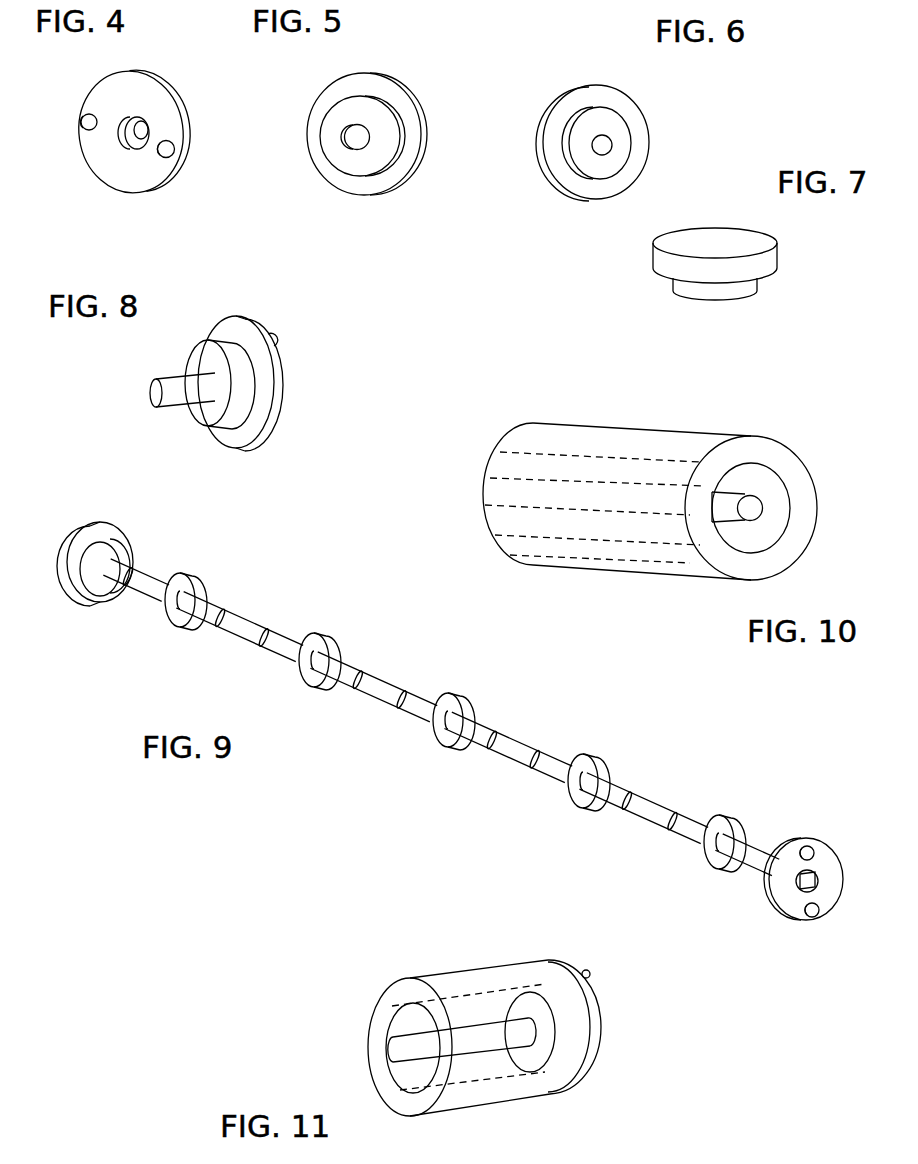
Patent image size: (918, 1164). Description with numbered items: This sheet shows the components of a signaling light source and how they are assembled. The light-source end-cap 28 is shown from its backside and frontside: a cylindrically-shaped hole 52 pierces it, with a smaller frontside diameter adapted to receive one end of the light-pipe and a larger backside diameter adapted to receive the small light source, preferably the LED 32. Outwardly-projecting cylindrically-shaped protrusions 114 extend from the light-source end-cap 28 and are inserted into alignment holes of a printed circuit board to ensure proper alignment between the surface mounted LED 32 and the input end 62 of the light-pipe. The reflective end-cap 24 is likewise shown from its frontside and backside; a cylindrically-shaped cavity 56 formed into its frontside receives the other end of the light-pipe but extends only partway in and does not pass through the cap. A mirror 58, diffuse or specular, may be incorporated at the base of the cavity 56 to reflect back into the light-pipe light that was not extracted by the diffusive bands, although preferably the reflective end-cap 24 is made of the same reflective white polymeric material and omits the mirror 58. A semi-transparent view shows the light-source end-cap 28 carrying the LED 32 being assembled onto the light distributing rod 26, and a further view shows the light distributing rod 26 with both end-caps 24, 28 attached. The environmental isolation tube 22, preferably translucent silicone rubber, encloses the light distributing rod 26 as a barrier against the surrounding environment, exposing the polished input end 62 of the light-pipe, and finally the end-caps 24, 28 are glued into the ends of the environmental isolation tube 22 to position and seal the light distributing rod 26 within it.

In FIG. 10, the environmental isolation tube 22 is at (609, 571).
In FIG. 11, the environmental isolation tube 22 is at (380, 1001).
In FIG. 6, the reflective end-cap 24 is at (633, 100).
In FIG. 7, the reflective end-cap 24 is at (787, 241).
In FIG. 9, the reflective end-cap 24 is at (88, 608).
In FIG. 8, the light distributing rod 26 is at (150, 392).
In FIG. 10, the light distributing rod 26 is at (754, 494).
In FIG. 9, the light distributing rod 26 is at (372, 705).
In FIG. 11, the light distributing rod 26 is at (396, 1051).
In FIG. 4, the light-source end-cap 28 is at (82, 96).
In FIG. 5, the light-source end-cap 28 is at (315, 91).
In FIG. 8, the light-source end-cap 28 is at (190, 349).
In FIG. 9, the light-source end-cap 28 is at (765, 889).
In FIG. 11, the light-source end-cap 28 is at (602, 1056).
In FIG. 9, the LED 32 is at (803, 888).
In FIG. 4, the cylindrically-shaped hole 52 is at (125, 146).
In FIG. 5, the cylindrically-shaped hole 52 is at (349, 151).
In FIG. 6, the cylindrically-shaped cavity 56 is at (592, 160).
In FIG. 6, the mirror 58 is at (606, 147).
In FIG. 10, the input end 62 is at (760, 507).
In FIG. 4, the cylindrically-shaped protrusions 114 is at (96, 109).
In FIG. 8, the cylindrically-shaped protrusions 114 is at (280, 340).
In FIG. 9, the cylindrically-shaped protrusions 114 is at (822, 900).
In FIG. 11, the cylindrically-shaped protrusions 114 is at (592, 975).